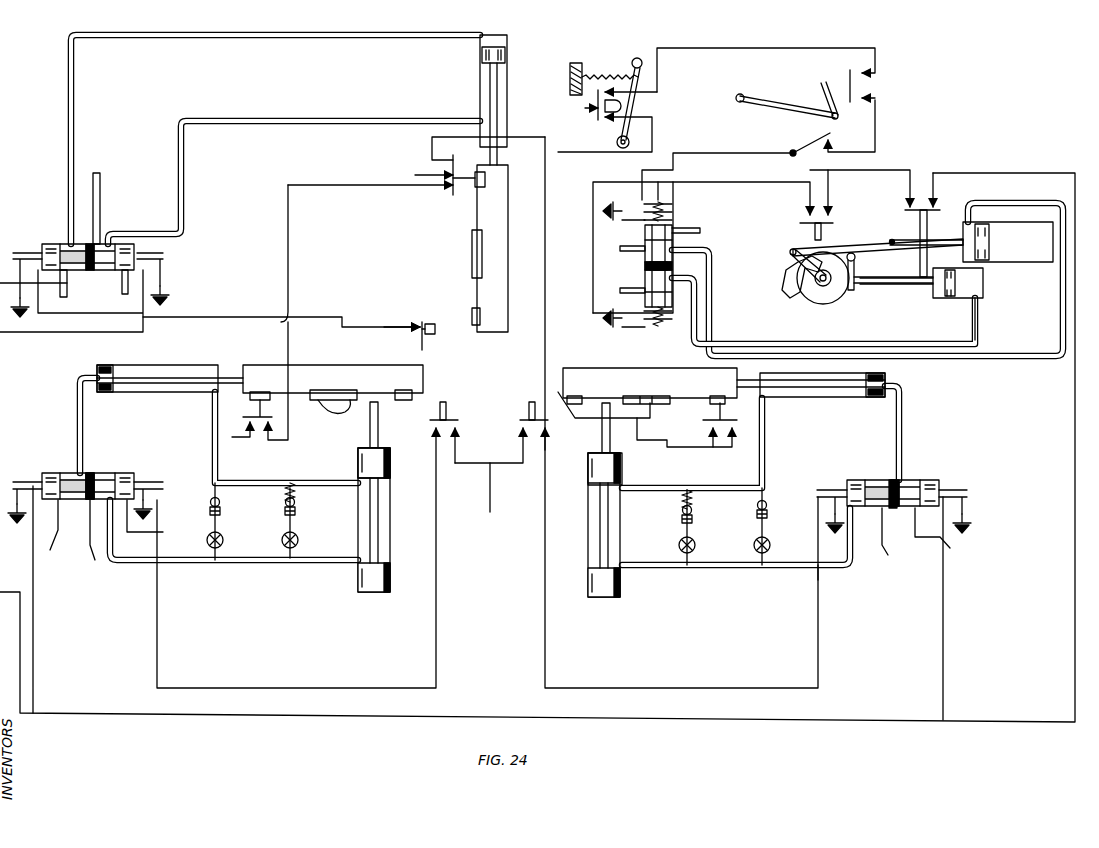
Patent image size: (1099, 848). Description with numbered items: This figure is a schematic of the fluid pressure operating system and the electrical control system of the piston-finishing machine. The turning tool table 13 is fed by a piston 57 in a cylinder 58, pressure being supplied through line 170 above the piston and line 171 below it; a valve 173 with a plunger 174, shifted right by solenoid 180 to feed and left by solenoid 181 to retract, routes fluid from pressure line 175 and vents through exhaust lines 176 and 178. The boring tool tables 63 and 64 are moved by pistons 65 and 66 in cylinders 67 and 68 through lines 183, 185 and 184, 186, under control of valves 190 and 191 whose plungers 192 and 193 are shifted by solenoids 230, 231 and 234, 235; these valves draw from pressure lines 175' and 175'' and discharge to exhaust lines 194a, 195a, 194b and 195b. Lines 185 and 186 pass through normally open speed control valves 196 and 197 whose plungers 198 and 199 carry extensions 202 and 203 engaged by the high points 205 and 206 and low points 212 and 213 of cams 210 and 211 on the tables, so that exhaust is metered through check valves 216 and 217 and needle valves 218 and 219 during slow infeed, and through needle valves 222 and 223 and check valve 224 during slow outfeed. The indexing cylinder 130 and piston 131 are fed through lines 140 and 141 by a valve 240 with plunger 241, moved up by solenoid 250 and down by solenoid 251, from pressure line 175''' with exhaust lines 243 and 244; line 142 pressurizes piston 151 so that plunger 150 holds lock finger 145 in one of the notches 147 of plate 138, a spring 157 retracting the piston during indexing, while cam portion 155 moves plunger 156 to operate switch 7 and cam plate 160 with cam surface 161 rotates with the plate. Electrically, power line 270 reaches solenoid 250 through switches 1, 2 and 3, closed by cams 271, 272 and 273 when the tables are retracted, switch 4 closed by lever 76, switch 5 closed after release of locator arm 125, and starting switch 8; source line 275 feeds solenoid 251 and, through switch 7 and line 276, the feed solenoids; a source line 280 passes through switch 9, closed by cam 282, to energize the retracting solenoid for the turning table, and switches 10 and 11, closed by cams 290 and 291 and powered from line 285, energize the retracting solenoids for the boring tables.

The switch 1 is at (256, 440).
The switch 2 is at (412, 174).
The switch 3 is at (706, 444).
The switch 4 is at (572, 109).
The switch 5 is at (868, 92).
The control switch 7 is at (936, 190).
The starting switch 8 is at (802, 144).
The switch 9 is at (440, 340).
The switch 10 is at (522, 415).
The switch 11 is at (478, 410).
The turning tool table 13 is at (509, 226).
The piston 57 is at (506, 54).
The cylinder 58 is at (508, 88).
The boring tool table 63 is at (600, 368).
The boring tool table 64 is at (348, 366).
The piston 65 is at (882, 378).
The piston 66 is at (106, 366).
The cylinder 67 is at (820, 398).
The cylinder 68 is at (186, 366).
The lever 76 is at (634, 57).
The locator arm 125 is at (790, 102).
The fluid pressure cylinder 130 is at (1042, 224).
The piston 131 is at (990, 242).
The circular plate 138 is at (810, 305).
The line 140 is at (1046, 203).
The line 141 is at (1062, 293).
The line 142 is at (977, 320).
The lock finger 145 is at (850, 290).
The notches 147 is at (825, 302).
The plunger 150 is at (895, 285).
The piston 151 is at (984, 284).
The cut-away cam portion 155 is at (898, 276).
The vertically slidable plunger 156 is at (920, 226).
The spring 157 is at (950, 270).
The cam plate 160 is at (790, 298).
The cam surface portion 161 is at (790, 283).
The line 170 is at (376, 37).
The line 171 is at (366, 118).
The valve 173 is at (99, 268).
The plunger 174 is at (88, 244).
The pressure line 175 is at (116, 200).
The pressure line 175' is at (898, 547).
The pressure line 175'' is at (112, 546).
The pressure line 175''' is at (603, 255).
The exhaust line 176 is at (33, 285).
The exhaust line 178 is at (125, 295).
The solenoid 180 is at (165, 250).
The solenoid 181 is at (28, 252).
The line 183 is at (902, 424).
The line 184 is at (84, 430).
The line 185 is at (766, 441).
The line 186 is at (273, 564).
The valve 190 is at (910, 478).
The valve 191 is at (112, 472).
The plunger 192 is at (890, 478).
The plunger 193 is at (90, 472).
The exhaust line 194a is at (957, 528).
The exhaust line 194b is at (65, 537).
The exhaust line 195a is at (830, 562).
The exhaust line 195b is at (165, 520).
The speed control valve 196 is at (622, 526).
The speed control valve 197 is at (390, 532).
The plunger 198 is at (618, 470).
The plunger 199 is at (388, 468).
The extension 202 is at (600, 428).
The extension 203 is at (379, 436).
The high point 205 is at (638, 398).
The high point 206 is at (328, 414).
The cam 210 is at (704, 368).
The cam 211 is at (358, 394).
The low point 212 is at (648, 432).
The low point 213 is at (336, 394).
The check valve 216 is at (768, 505).
The check valve 217 is at (221, 506).
The needle valve 218 is at (771, 548).
The needle valve 219 is at (224, 542).
The needle valve 222 is at (696, 548).
The needle valve 223 is at (299, 542).
The check valve 224 is at (694, 509).
The solenoid 230 is at (955, 488).
The solenoid 231 is at (823, 488).
The solenoid 234 is at (30, 480).
The solenoid 235 is at (152, 484).
The valve 240 is at (646, 244).
The plunger 241 is at (650, 266).
The exhaust line 243 is at (620, 290).
The exhaust line 244 is at (698, 230).
The solenoid 250 is at (672, 208).
The solenoid 251 is at (655, 336).
The power source line 270 is at (289, 230).
The cam 271 is at (262, 388).
The cam 272 is at (487, 180).
The cam 273 is at (718, 398).
The power source line 275 is at (593, 218).
The line 276 is at (1006, 178).
The line 280 is at (391, 336).
The cam 282 is at (472, 314).
The power source line 285 is at (508, 487).
The cam 290 is at (576, 398).
The cam 291 is at (412, 396).